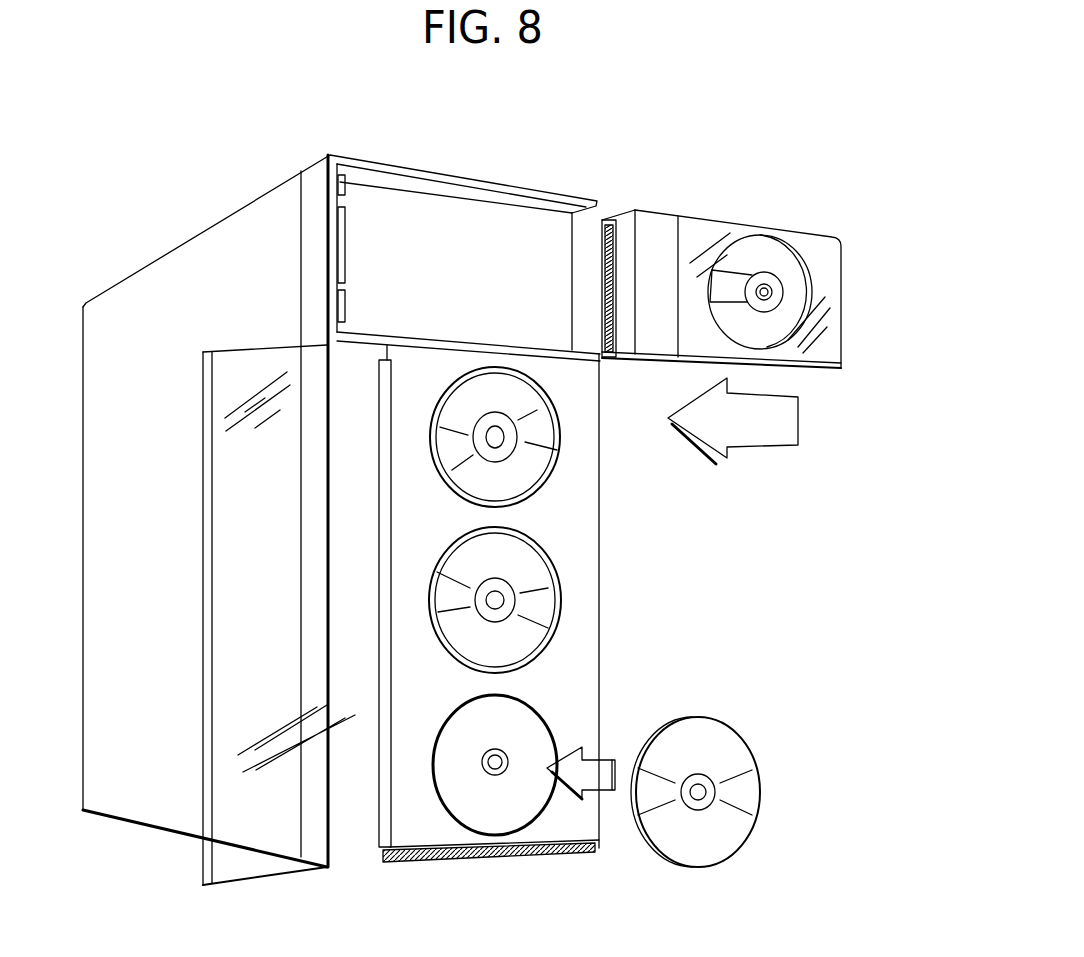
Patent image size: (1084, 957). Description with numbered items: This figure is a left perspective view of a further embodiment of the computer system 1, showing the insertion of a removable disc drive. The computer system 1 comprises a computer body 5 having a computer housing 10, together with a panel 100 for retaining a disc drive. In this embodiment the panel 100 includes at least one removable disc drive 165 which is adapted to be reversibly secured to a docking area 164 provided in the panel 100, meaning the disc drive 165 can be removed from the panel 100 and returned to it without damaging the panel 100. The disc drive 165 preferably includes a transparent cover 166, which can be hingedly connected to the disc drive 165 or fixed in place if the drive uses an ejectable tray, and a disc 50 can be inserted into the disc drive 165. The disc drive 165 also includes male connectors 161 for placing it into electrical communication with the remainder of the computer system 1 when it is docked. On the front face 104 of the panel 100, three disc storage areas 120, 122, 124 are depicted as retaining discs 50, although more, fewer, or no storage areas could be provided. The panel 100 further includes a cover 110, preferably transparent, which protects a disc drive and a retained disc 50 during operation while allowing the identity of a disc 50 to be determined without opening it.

The computer system 1 is at (697, 614).
The computer body 5 is at (94, 294).
The computer housing 10 is at (187, 253).
The disc 50 is at (387, 343).
The panel 100 is at (422, 834).
The front face 104 is at (567, 675).
The cover 110 is at (190, 862).
The disc storage area 120 is at (557, 613).
The disc storage area 122 is at (545, 462).
The disc storage area 124 is at (508, 798).
The male connectors 161 is at (591, 274).
The docking area 164 is at (407, 230).
The removable disc drive 165 is at (757, 297).
The transparent cover 166 is at (825, 260).